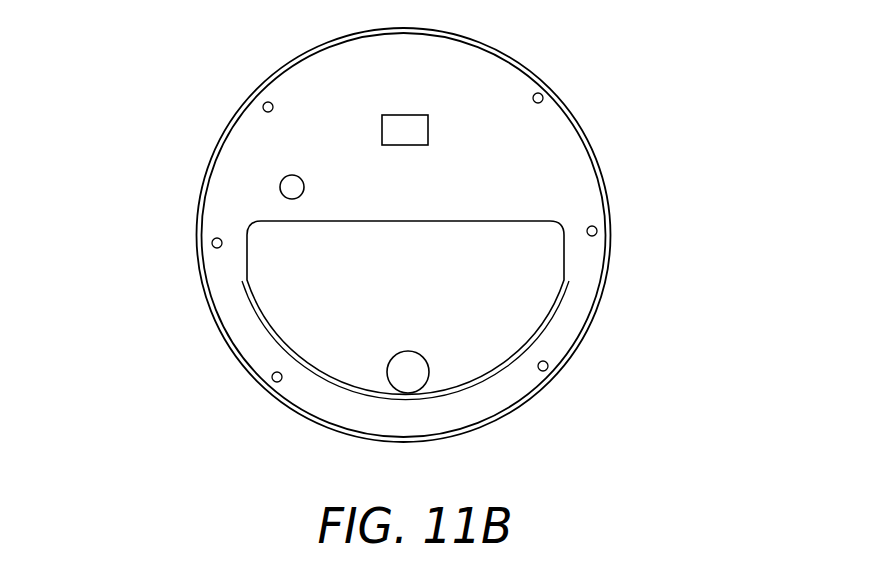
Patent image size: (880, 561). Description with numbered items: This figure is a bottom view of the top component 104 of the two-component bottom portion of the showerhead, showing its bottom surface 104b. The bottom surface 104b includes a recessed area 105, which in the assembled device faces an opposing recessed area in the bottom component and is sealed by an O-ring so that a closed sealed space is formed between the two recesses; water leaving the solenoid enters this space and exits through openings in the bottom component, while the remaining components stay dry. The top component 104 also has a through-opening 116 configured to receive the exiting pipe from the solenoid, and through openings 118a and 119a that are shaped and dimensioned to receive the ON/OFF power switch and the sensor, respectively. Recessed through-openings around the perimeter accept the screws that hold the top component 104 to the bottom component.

The top component 104 is at (118, 170).
The bottom surface 104b is at (553, 182).
The recessed area 105 is at (520, 293).
The through-opening 116 is at (407, 367).
The through opening 118a is at (280, 188).
The through opening 119a is at (413, 128).